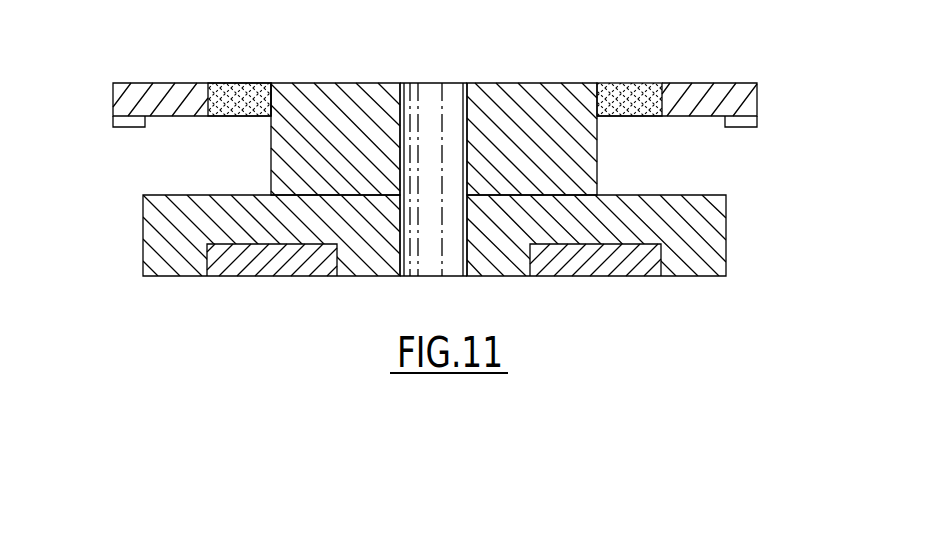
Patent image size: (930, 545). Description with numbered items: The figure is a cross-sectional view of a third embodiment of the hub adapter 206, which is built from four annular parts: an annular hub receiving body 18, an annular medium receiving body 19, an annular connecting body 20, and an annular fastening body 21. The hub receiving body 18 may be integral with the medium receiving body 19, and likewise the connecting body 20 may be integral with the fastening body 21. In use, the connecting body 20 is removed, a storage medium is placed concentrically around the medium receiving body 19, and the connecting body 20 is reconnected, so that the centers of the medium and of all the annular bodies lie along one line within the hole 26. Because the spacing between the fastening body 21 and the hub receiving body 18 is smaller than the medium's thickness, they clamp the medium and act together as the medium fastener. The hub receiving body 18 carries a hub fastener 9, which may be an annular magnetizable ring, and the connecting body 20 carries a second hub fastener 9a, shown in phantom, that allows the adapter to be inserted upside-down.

The hub fastener 9 is at (266, 277).
The second hub fastener 9a is at (247, 82).
The annular hub receiving body 18 is at (143, 224).
The annular medium receiving body 19 is at (325, 83).
The annular connecting body 20 is at (197, 83).
The annular fastening body 21 is at (115, 117).
The hole 26 is at (438, 82).
The hub adapter 206 is at (630, 42).